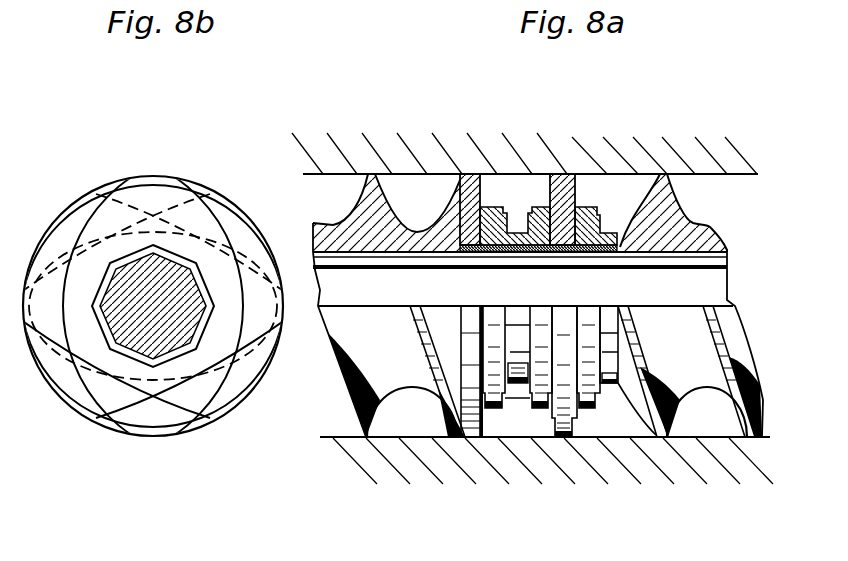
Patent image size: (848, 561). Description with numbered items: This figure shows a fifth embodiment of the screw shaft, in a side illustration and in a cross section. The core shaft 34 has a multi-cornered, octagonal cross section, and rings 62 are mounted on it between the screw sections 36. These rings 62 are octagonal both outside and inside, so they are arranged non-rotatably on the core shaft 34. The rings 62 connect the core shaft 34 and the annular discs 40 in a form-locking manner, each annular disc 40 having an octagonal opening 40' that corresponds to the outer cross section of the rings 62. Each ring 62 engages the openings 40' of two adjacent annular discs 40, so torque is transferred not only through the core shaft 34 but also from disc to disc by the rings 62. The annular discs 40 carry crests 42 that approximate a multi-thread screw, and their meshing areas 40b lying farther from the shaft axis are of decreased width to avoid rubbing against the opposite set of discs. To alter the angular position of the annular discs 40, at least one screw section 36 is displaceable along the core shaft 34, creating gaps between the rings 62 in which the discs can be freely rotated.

In FIG. 8B, the core shaft 34 is at (162, 333).
In FIG. 8A, the screw section 36 is at (408, 396).
In FIG. 8B, the annular disc 40 is at (214, 295).
In FIG. 8A, the annular disc 40 is at (539, 413).
In FIG. 8B, the octagonal opening 40' is at (121, 325).
In FIG. 8B, the meshing area 40b is at (138, 182).
In FIG. 8A, the meshing area 40b is at (505, 217).
In FIG. 8B, the crest 42 is at (153, 175).
In FIG. 8A, the crest 42 is at (490, 205).
In FIG. 8B, the ring 62 is at (202, 342).
In FIG. 8A, the ring 62 is at (577, 252).